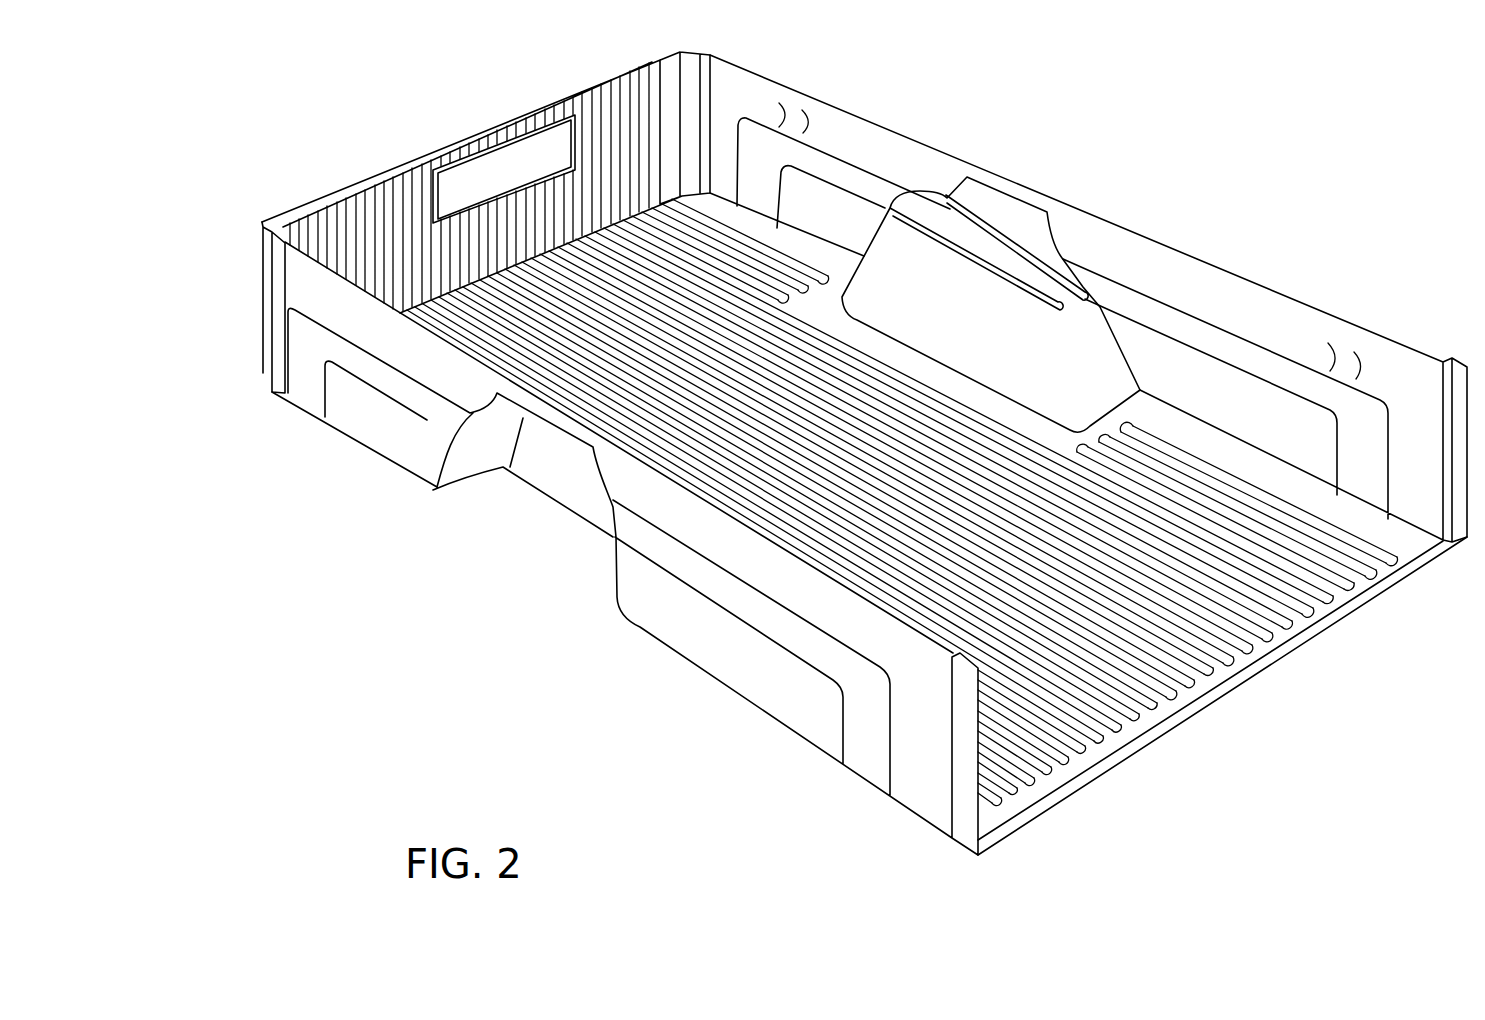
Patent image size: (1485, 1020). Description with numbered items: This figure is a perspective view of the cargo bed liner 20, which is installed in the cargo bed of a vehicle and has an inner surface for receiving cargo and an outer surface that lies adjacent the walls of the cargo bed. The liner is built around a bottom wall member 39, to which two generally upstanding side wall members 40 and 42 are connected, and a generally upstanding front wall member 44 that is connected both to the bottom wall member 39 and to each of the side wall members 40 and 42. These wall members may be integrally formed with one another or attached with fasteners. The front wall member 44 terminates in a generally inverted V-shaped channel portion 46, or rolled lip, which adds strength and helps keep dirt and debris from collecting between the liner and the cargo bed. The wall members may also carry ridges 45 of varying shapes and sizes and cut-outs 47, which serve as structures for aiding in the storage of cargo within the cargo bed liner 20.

The cargo bed liner 20 is at (1088, 177).
The bottom wall member 39 is at (1122, 700).
The side wall member 40 is at (680, 632).
The side wall member 42 is at (1226, 292).
The front wall member 44 is at (512, 130).
The ridges 45 is at (1058, 760).
The inverted V-shaped channel portion 46 is at (263, 229).
The cut-outs 47 is at (1333, 353).